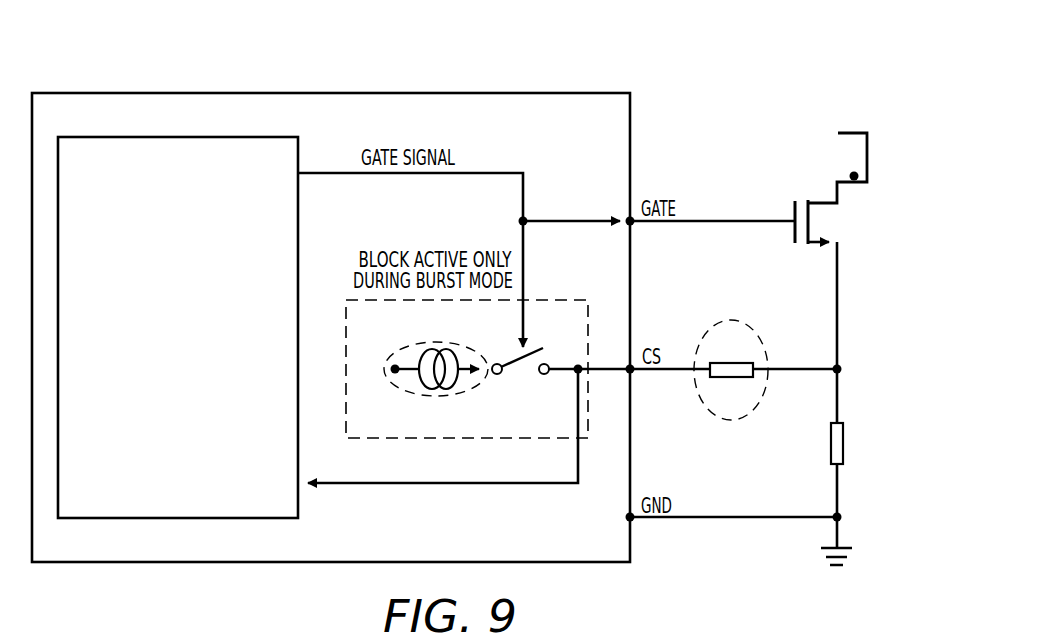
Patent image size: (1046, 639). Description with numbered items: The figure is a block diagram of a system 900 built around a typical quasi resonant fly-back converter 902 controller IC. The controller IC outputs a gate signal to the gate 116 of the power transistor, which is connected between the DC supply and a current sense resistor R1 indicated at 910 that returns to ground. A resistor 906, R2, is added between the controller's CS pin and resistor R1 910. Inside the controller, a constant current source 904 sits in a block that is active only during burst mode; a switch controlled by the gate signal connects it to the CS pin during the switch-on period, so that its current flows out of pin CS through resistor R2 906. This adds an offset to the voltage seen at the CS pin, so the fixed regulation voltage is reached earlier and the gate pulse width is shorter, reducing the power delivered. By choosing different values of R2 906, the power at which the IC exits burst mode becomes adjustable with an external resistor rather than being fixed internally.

The system 900 is at (797, 72).
The quasi resonant fly-back converter 902 is at (282, 137).
The constant current source 904 is at (441, 343).
The resistor R2 906 is at (731, 320).
The gate 116 is at (795, 205).
The resistor R1 910 is at (845, 445).